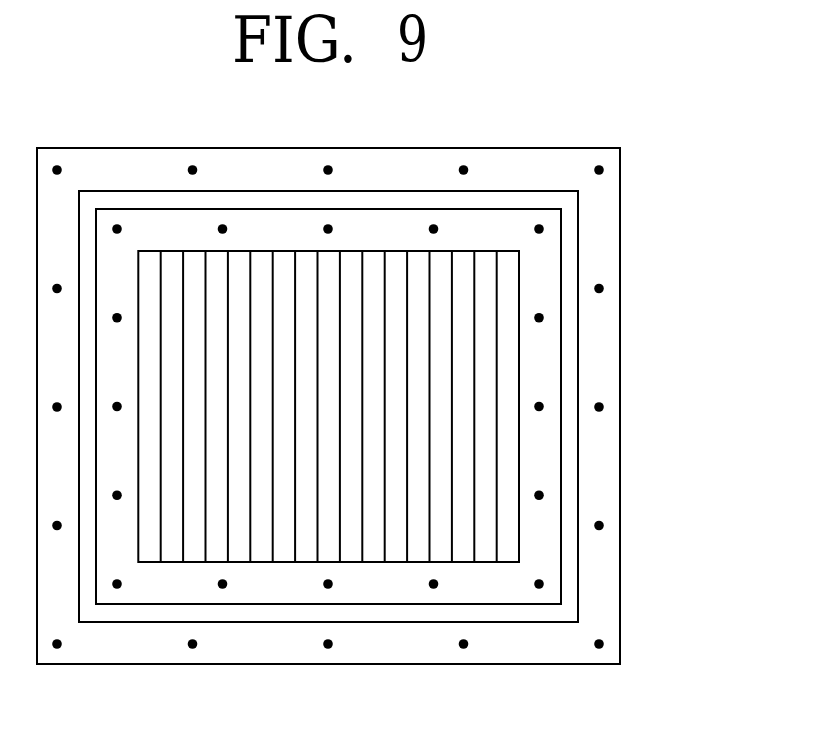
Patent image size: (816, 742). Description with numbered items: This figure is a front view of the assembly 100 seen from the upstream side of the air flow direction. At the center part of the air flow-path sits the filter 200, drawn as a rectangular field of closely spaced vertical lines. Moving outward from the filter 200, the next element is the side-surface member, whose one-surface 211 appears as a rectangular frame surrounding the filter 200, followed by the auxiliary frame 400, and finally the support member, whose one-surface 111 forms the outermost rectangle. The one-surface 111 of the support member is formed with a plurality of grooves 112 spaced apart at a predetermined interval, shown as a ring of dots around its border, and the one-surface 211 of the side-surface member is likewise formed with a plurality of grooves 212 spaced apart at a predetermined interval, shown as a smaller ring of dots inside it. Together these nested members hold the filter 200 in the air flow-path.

The battery module / housing assembly 100 is at (621, 619).
The one-surface of the support member 111 is at (603, 556).
The grooves 112 is at (603, 521).
The auxiliary frame 400 is at (570, 453).
The one-surface of the side-surface member 211 is at (543, 370).
The fastening holes of cover plate 212 is at (545, 313).
The filter 200 is at (440, 530).